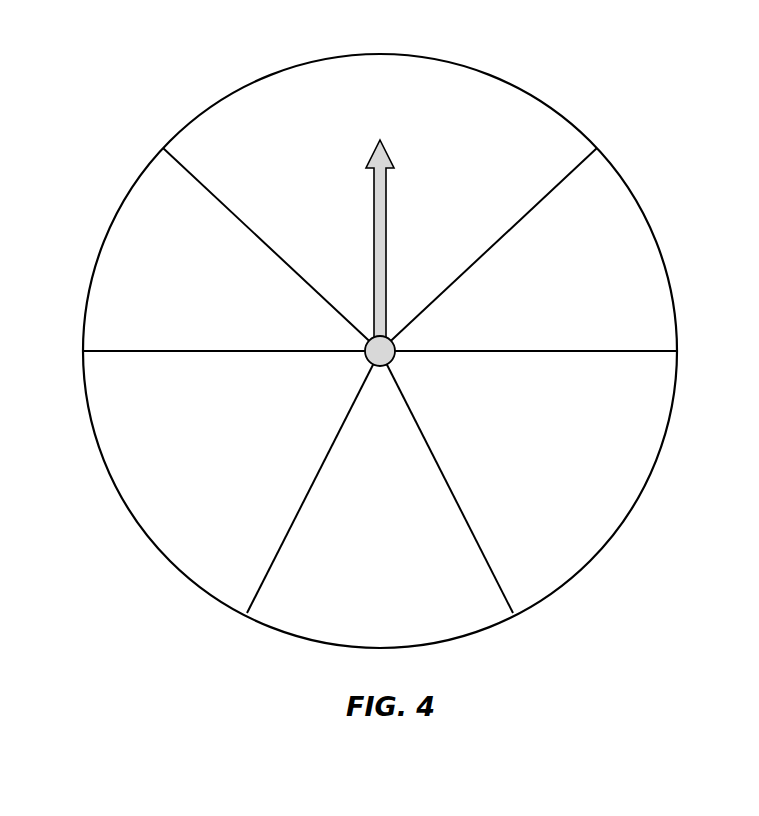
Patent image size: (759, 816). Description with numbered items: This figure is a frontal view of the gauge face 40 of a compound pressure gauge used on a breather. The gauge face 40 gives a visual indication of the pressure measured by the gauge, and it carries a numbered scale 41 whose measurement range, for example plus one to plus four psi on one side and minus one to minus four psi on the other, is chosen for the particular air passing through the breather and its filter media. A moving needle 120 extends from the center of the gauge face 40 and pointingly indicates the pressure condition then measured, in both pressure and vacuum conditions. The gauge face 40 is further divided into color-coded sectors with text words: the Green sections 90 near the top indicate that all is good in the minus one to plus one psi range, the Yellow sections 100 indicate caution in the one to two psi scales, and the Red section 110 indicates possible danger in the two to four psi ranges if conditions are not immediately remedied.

The gauge face 40 is at (201, 58).
The Green sections 90 is at (305, 62).
The Yellow sections 100 is at (118, 207).
The numbered scale 41 is at (119, 262).
The Red section 110 is at (100, 372).
The moving needle 120 is at (395, 156).